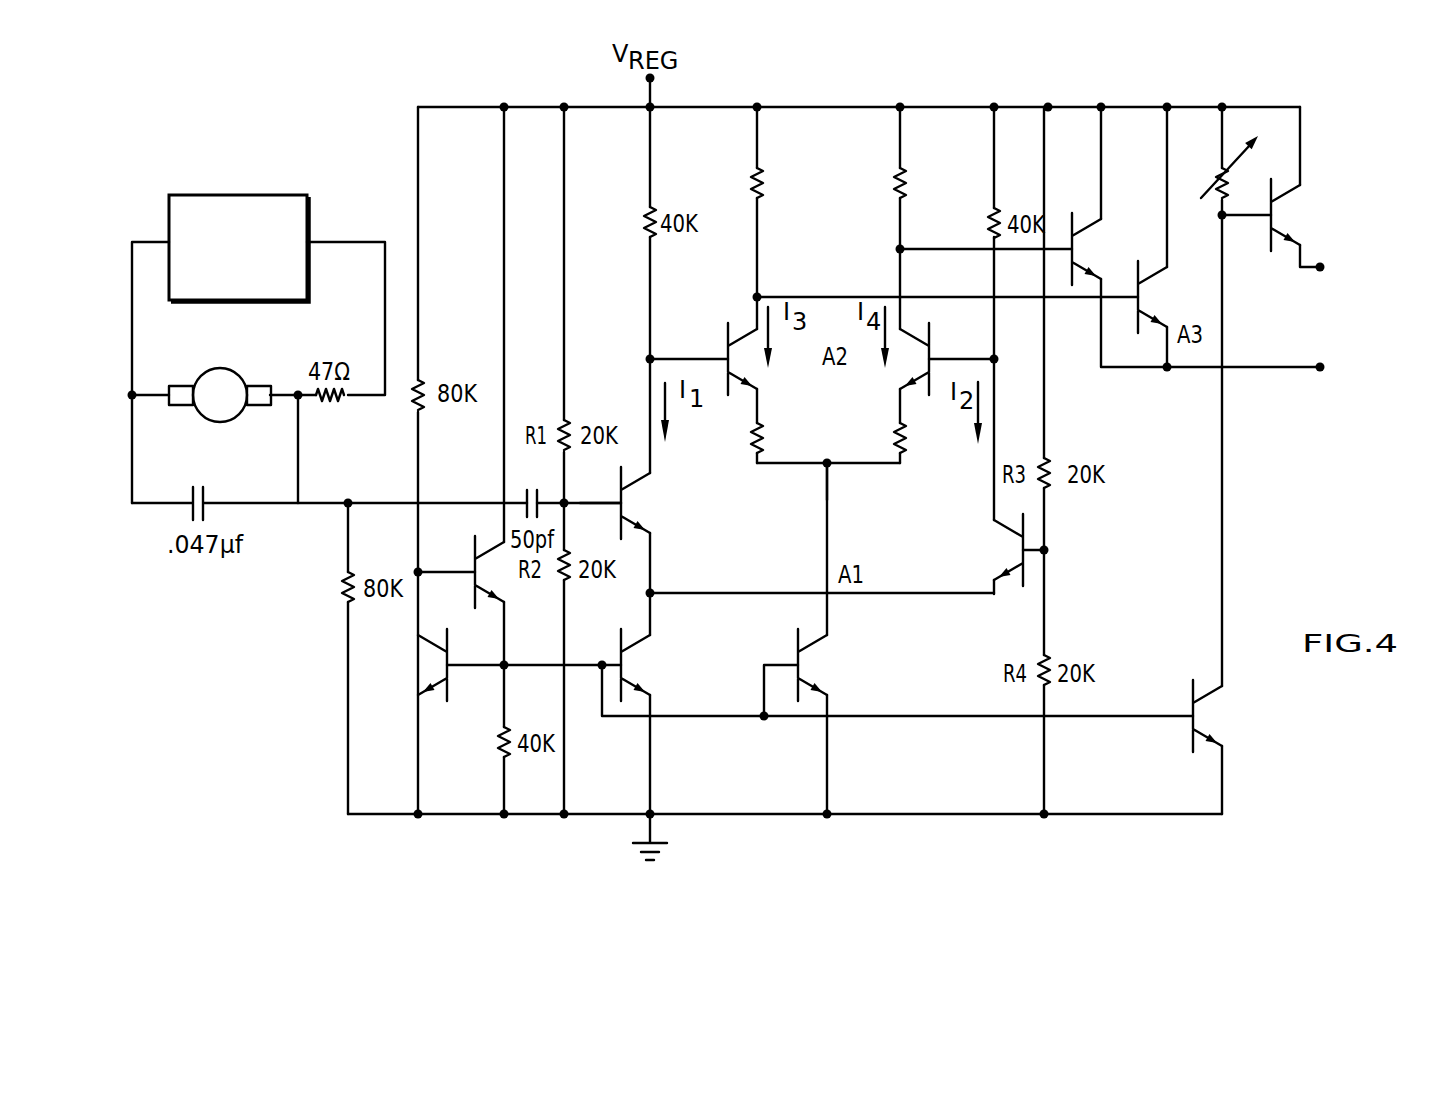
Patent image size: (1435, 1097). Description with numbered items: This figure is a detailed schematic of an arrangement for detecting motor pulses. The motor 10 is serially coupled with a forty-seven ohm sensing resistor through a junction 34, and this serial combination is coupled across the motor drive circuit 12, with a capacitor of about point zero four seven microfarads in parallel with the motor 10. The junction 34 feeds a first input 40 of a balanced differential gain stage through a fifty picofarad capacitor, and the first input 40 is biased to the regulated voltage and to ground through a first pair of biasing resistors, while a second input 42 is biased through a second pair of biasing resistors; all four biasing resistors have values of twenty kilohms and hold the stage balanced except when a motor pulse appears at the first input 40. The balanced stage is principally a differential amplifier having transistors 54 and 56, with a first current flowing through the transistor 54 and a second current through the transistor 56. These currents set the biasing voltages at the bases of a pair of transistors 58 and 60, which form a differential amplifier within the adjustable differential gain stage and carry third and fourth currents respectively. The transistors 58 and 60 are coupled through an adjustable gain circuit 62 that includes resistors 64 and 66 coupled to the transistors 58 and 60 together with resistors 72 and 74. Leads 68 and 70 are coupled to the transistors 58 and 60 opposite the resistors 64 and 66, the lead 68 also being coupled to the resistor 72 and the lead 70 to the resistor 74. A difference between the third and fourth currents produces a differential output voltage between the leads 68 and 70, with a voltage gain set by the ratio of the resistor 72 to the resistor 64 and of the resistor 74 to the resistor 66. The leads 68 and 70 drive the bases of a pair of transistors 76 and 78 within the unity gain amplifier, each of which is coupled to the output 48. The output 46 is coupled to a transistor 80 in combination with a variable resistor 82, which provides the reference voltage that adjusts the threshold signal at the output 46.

The motor 10 is at (226, 422).
The motor drive circuit 12 is at (230, 301).
The junction 34 is at (300, 398).
The first input 40 is at (585, 502).
The second input 42 is at (588, 668).
The output 46 is at (1322, 266).
The output 48 is at (1322, 366).
The transistor 54 is at (644, 484).
The transistor 56 is at (993, 524).
The transistor 58 is at (742, 332).
The transistor 60 is at (902, 332).
The adjustable gain circuit 62 is at (874, 468).
The resistor 64 is at (750, 452).
The resistor 66 is at (900, 428).
The lead 68 is at (810, 297).
The lead 70 is at (932, 253).
The resistor 72 is at (763, 172).
The resistor 74 is at (906, 172).
The transistor 76 is at (1098, 223).
The transistor 78 is at (1168, 265).
The transistor 80 is at (1299, 190).
The variable resistor 82 is at (1220, 173).